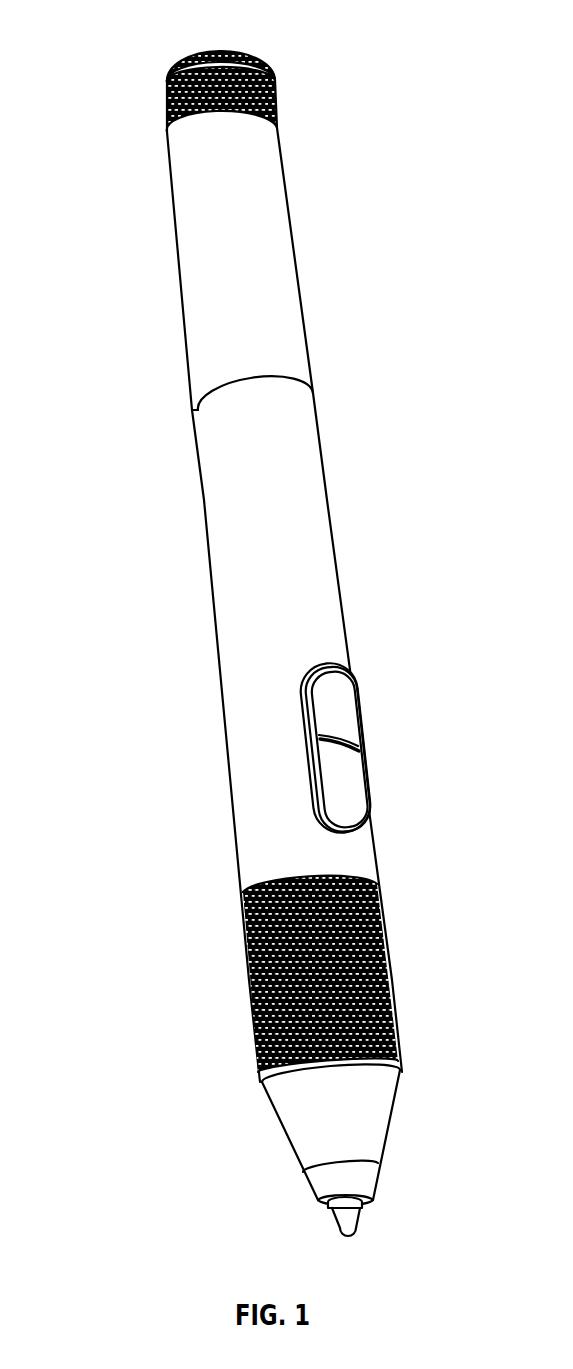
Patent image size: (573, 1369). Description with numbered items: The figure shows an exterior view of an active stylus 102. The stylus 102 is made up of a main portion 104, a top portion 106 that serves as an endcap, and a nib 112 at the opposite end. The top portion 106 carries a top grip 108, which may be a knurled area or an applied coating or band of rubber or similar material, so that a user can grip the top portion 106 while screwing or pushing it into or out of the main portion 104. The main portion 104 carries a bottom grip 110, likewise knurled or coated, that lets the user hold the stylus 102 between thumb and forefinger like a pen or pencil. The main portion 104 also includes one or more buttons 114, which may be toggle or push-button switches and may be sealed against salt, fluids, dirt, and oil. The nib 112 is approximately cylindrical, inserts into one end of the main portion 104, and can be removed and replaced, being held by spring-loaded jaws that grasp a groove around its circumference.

The stylus 102 is at (178, 65).
The main portion 104 is at (320, 438).
The top portion 106 is at (295, 262).
The top grip 108 is at (165, 110).
The bottom grip 110 is at (387, 968).
The nib 112 is at (358, 1228).
The buttons 114 is at (350, 740).